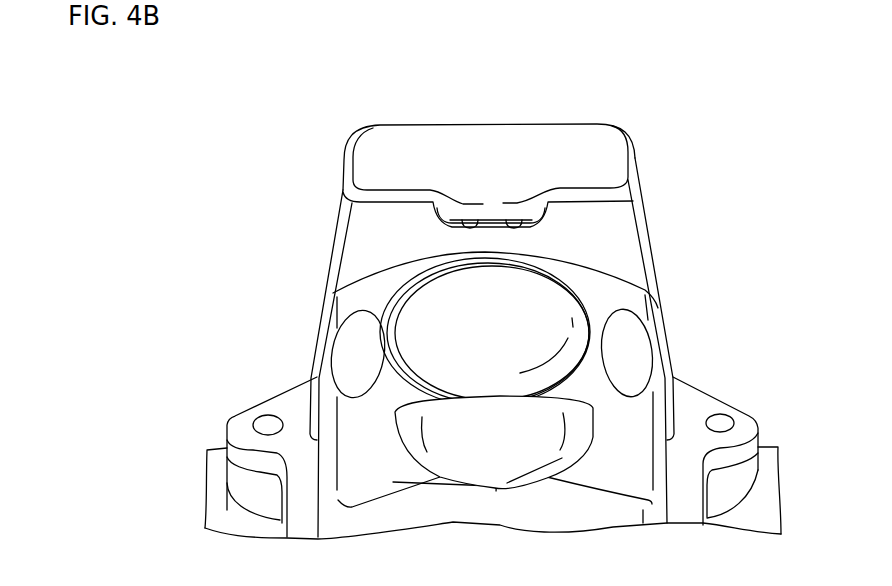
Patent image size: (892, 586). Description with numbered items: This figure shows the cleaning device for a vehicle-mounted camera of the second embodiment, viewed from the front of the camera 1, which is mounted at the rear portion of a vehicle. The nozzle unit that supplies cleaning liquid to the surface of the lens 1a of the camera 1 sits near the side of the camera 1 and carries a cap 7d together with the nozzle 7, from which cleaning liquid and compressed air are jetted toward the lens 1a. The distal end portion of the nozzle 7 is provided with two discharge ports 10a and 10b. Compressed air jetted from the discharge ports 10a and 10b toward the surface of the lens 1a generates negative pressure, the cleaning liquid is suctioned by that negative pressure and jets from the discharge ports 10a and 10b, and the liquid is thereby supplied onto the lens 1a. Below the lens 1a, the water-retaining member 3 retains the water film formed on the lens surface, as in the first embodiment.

The camera 1 is at (651, 327).
The lens 1a is at (428, 320).
The water-retaining member 3 is at (542, 456).
The nozzle 7 is at (643, 217).
The cap 7d is at (382, 133).
The discharge port 10a is at (466, 219).
The discharge port 10b is at (513, 219).